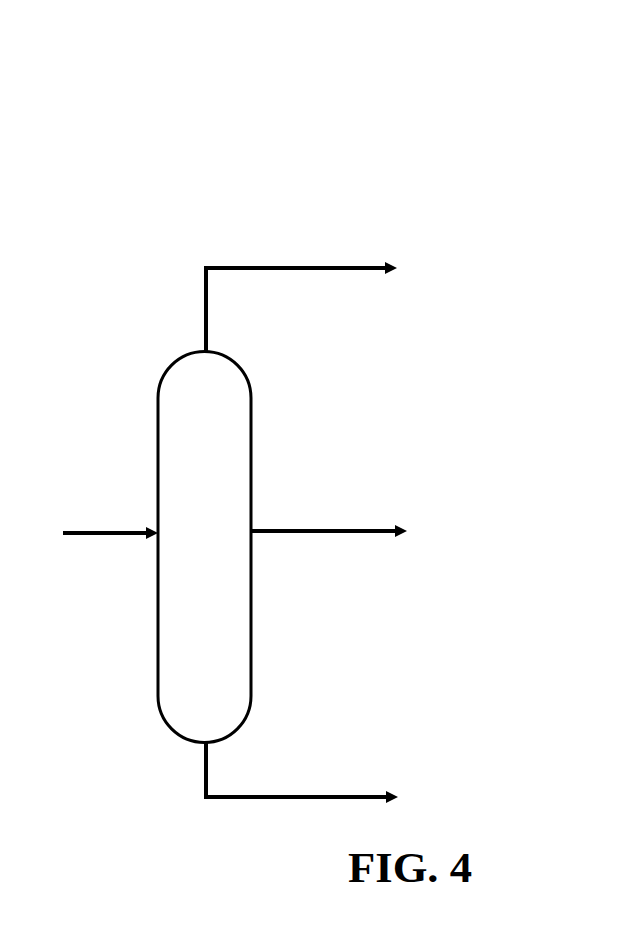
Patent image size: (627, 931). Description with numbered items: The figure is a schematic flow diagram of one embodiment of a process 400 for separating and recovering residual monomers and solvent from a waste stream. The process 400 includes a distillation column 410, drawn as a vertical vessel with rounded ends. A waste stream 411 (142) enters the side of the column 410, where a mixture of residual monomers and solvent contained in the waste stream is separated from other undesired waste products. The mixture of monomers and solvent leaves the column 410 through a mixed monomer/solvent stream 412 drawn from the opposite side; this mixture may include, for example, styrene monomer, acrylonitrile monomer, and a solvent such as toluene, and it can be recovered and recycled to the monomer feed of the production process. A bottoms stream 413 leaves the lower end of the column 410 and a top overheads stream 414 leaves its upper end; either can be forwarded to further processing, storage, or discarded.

The process 400 is at (421, 95).
The distillation column 410 is at (177, 542).
The waste stream 411 is at (103, 532).
The feed stream 142 is at (105, 483).
The mixed monomer/solvent stream 412 is at (354, 530).
The bottoms stream 413 is at (312, 797).
The top overheads stream 414 is at (320, 267).